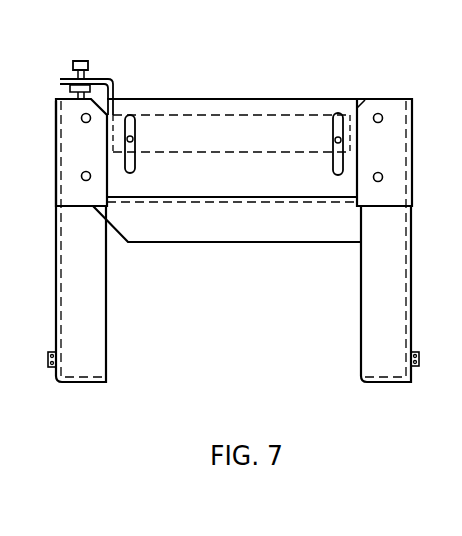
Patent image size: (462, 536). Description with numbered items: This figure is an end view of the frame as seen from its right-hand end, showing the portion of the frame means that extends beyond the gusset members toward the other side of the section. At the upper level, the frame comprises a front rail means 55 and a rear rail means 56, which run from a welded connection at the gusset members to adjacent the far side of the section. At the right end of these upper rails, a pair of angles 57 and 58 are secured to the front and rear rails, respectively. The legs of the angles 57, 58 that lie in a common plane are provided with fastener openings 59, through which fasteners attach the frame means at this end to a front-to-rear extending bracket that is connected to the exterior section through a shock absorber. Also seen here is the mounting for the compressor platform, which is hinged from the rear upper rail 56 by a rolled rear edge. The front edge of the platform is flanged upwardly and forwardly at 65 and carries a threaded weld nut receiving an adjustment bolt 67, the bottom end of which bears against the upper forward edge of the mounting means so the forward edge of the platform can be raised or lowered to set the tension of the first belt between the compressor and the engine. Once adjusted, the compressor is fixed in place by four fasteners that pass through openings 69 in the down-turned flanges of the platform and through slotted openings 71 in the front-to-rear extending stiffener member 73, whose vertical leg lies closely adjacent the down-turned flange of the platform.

The front rail means 55 is at (57, 167).
The rear rail means 56 is at (412, 158).
The angle 57 is at (73, 201).
The angle 58 is at (397, 190).
The fastener openings 59 is at (86, 123).
The forward flange 65 is at (111, 79).
The adjustment bolt 67 is at (86, 58).
The openings 69 is at (133, 139).
The slotted openings 71 is at (133, 173).
The stiffener member 73 is at (243, 190).